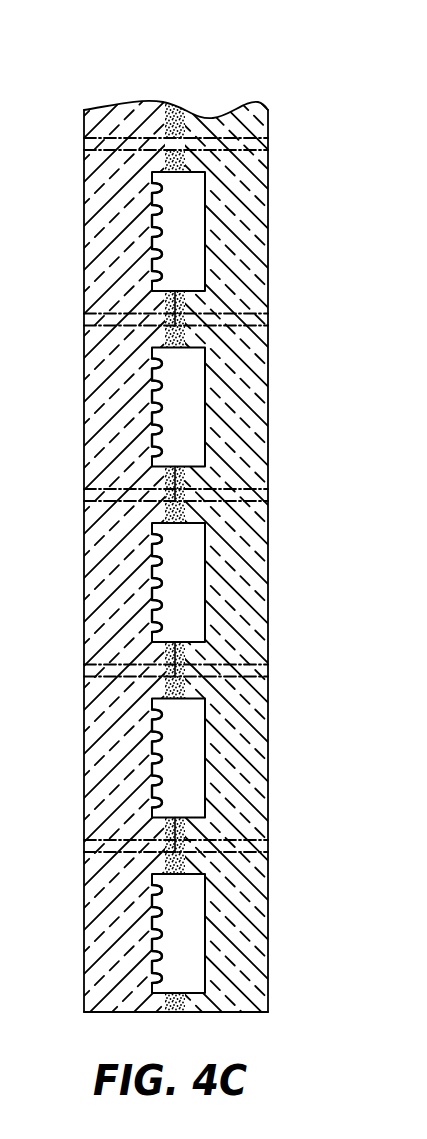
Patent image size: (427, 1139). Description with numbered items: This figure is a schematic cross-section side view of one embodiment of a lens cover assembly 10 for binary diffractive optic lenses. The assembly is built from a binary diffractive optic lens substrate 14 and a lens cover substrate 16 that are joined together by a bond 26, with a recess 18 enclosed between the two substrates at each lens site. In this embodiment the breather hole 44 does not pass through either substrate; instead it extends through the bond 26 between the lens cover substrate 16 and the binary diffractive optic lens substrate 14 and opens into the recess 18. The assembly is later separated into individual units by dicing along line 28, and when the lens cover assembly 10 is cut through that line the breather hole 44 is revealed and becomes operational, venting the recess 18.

The lens cover assembly 10 is at (105, 72).
The binary diffractive optic lens substrate 14 is at (93, 275).
The lens cover substrate 16 is at (257, 190).
The recess 18 is at (195, 228).
The bond 26 is at (175, 110).
The dicing line 28 is at (276, 320).
The breather hole 44 is at (170, 357).